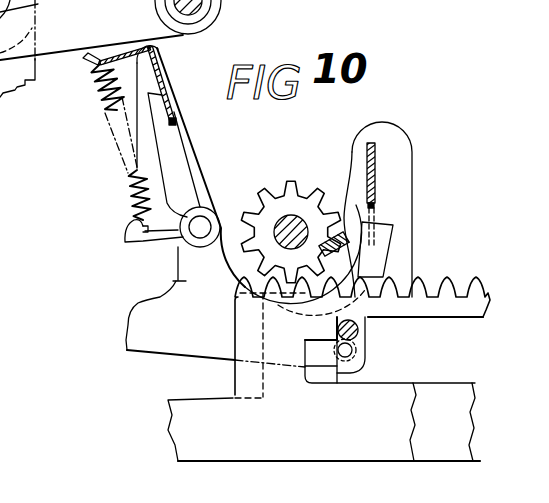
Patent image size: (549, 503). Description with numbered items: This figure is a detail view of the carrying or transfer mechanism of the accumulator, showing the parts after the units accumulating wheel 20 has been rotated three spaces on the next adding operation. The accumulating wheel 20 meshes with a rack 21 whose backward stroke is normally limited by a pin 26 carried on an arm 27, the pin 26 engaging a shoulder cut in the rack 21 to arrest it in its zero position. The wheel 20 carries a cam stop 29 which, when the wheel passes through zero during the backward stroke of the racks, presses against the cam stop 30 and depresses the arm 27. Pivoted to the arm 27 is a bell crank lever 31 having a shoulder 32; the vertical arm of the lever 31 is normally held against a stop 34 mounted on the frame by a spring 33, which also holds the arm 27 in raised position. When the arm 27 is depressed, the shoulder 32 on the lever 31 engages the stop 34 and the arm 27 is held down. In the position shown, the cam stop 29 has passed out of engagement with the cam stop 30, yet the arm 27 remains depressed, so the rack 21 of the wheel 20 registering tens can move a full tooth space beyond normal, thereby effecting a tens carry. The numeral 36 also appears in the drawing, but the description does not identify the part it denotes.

The accumulating wheel 20 is at (284, 182).
The rack 21 is at (450, 300).
The pin 26 is at (358, 330).
The arm 27 is at (173, 280).
The cam stop 29 is at (345, 222).
The cam stop 30 is at (262, 306).
The bell crank lever 31 is at (173, 143).
The shoulder 32 is at (174, 126).
The spring 33 is at (98, 97).
The stop 34 is at (166, 48).
The link 36 is at (35, 48).